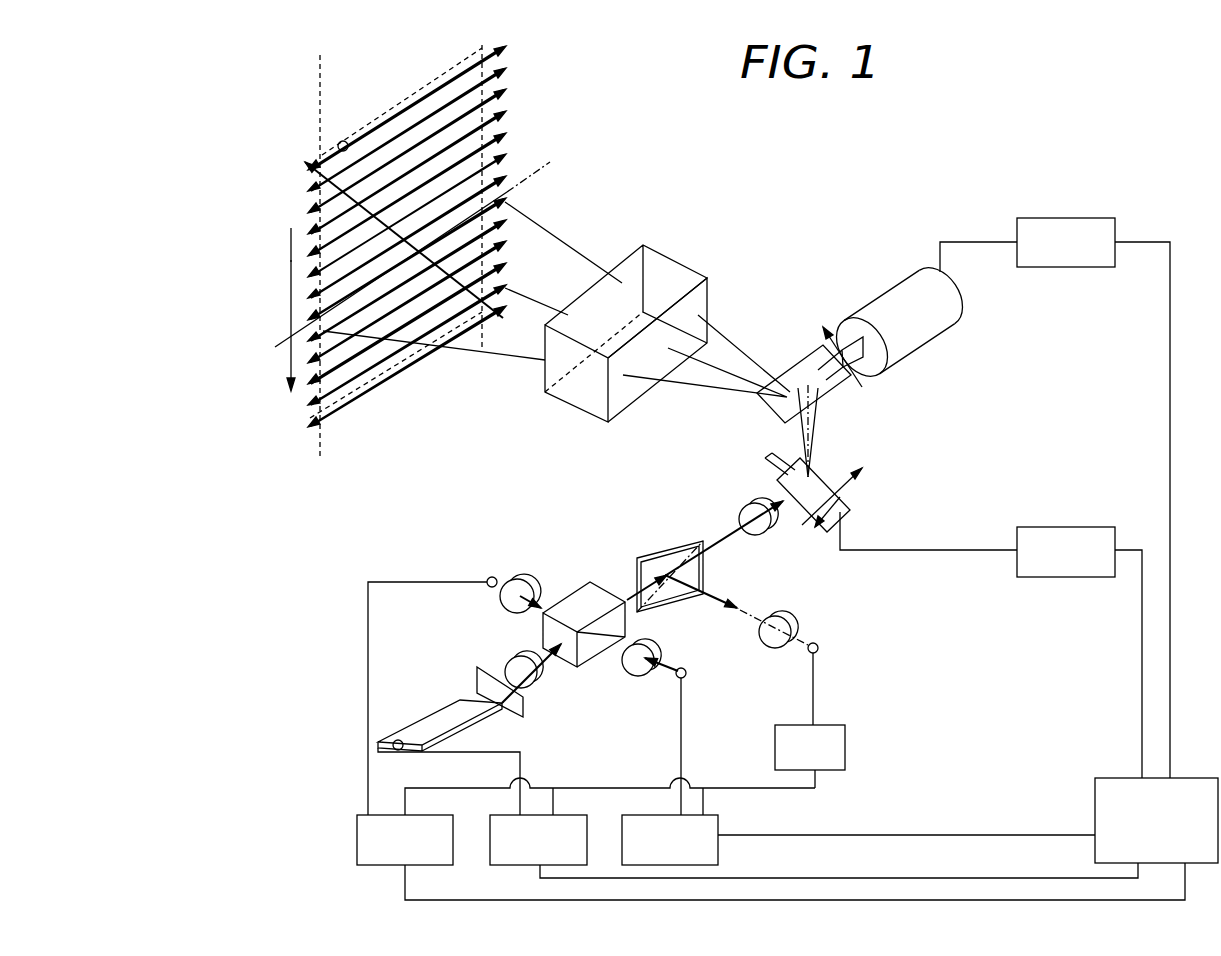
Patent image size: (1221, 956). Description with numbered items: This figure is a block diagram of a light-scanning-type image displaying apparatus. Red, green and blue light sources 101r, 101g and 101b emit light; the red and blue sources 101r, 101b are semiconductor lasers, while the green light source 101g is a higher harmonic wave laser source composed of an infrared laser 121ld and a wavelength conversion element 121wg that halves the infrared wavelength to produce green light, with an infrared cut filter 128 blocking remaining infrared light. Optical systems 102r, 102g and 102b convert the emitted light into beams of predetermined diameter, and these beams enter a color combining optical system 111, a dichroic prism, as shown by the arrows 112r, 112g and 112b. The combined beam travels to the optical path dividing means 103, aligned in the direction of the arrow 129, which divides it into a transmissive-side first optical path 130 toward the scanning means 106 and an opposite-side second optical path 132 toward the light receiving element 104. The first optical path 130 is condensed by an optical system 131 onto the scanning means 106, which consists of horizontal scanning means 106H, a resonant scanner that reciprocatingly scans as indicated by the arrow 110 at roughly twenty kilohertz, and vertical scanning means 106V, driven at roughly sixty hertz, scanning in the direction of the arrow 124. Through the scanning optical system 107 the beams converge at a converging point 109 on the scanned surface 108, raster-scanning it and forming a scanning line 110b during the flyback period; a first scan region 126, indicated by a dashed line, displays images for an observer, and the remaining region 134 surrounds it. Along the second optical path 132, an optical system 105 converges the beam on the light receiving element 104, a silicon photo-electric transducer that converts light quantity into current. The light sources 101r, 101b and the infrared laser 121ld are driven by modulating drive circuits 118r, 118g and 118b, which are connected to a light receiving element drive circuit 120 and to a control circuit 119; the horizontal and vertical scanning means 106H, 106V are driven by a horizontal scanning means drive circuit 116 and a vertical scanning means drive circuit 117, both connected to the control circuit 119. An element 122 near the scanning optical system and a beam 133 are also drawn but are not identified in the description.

The blue light source 101b is at (490, 578).
The green light source 101g is at (388, 717).
The red light source 101r is at (684, 680).
The blue optical system 102b is at (512, 608).
The green optical system 102g is at (533, 688).
The red optical system 102r is at (636, 678).
The optical path dividing means 103 is at (637, 563).
The light receiving element 104 is at (820, 650).
The optical system 105 is at (770, 648).
The scanning means 106 is at (865, 470).
The horizontal scanning means 106H is at (855, 512).
The vertical scanning means 106V is at (857, 384).
The scanning optical system 107 is at (685, 275).
The scanned surface 108 is at (533, 167).
The converging point 109 is at (339, 142).
The scanning line 110 is at (315, 186).
The flyback scanning line 110b is at (291, 228).
The color combining optical system 111 is at (573, 600).
The blue light beam arrow 112b is at (527, 575).
The green light beam arrow 112g is at (563, 680).
The red light beam arrow 112r is at (652, 672).
The horizontal scanning means drive circuit 116 is at (991, 645).
The vertical scanning means drive circuit 117 is at (1055, 498).
The blue modulating drive circuit 118b is at (771, 857).
The green modulating drive circuit 118g is at (814, 846).
The red modulating drive circuit 118r is at (858, 840).
The control circuit 119 is at (1156, 820).
The light receiving element drive circuit 120 is at (810, 756).
The infrared laser 121ld is at (390, 748).
The wavelength conversion element 121wg is at (428, 718).
The relay optical system 122 is at (598, 248).
The vertical scanning direction arrow 124 is at (289, 367).
The first scan region 126 is at (387, 112).
The infrared cut filter 128 is at (477, 680).
The alignment direction arrow 129 is at (658, 570).
The first optical path 130 is at (743, 502).
The optical system 131 is at (757, 537).
The second optical path 132 is at (725, 592).
The projection beam 133 is at (747, 355).
The remaining region 134 is at (517, 137).